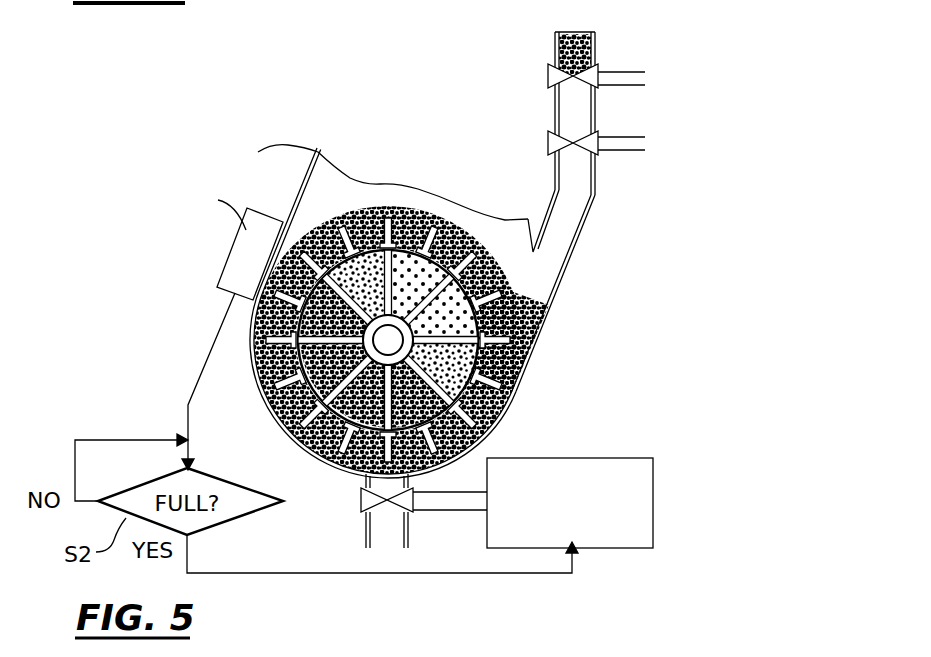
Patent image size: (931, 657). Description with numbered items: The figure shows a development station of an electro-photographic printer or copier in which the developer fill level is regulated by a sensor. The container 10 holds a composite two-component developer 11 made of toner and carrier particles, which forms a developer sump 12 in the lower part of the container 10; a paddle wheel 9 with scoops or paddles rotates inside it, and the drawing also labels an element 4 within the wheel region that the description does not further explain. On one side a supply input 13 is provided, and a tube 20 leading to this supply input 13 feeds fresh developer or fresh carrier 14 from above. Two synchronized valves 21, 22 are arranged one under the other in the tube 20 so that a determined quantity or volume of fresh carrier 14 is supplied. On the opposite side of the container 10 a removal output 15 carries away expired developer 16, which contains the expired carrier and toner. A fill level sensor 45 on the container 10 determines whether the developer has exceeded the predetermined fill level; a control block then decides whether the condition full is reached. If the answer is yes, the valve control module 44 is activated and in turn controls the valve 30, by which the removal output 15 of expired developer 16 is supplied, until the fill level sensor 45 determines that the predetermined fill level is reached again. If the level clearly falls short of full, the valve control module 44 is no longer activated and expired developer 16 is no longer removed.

The rotary drum 4 is at (458, 320).
The paddle wheel 9 is at (453, 232).
The container 10 is at (258, 404).
The developer 11 is at (362, 217).
The developer sump 12 is at (283, 428).
The supply input 13 is at (560, 276).
The fresh carrier 14 is at (595, 47).
The removal output 15 is at (366, 533).
The expired developer 16 is at (362, 486).
The tube 20 is at (555, 48).
The valve 21 is at (597, 87).
The valve 22 is at (597, 153).
The valve 30 is at (365, 497).
The valve control module 44 is at (643, 518).
The fill level sensor 45 is at (255, 244).